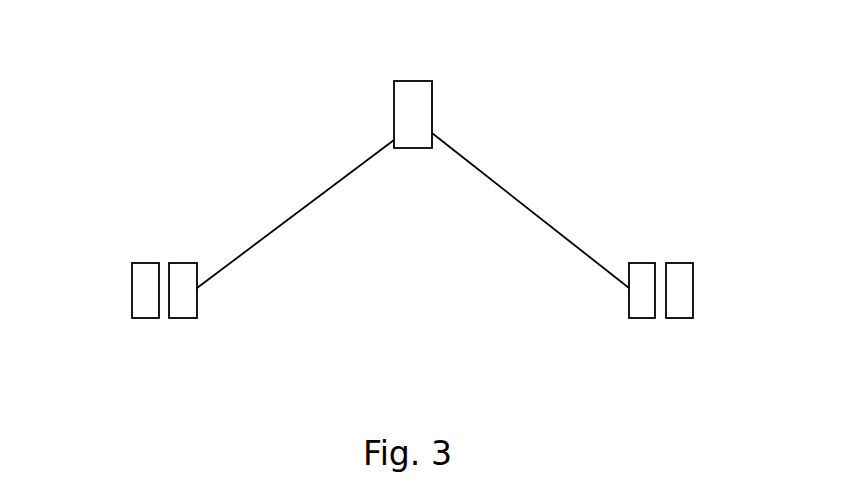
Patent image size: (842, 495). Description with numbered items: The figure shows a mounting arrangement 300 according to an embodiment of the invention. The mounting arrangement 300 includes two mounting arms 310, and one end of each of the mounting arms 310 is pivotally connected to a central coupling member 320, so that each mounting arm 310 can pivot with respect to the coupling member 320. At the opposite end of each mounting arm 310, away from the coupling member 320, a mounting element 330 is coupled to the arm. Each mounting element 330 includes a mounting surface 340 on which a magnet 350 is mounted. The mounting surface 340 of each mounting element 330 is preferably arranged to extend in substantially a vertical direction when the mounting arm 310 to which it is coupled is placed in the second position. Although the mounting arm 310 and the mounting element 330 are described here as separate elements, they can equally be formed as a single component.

The mounting arrangement 300 is at (753, 410).
The mounting arm 310 is at (260, 240).
The coupling member 320 is at (432, 98).
The mounting element 330 is at (182, 318).
The mounting surface 340 is at (163, 263).
The magnet 350 is at (132, 278).